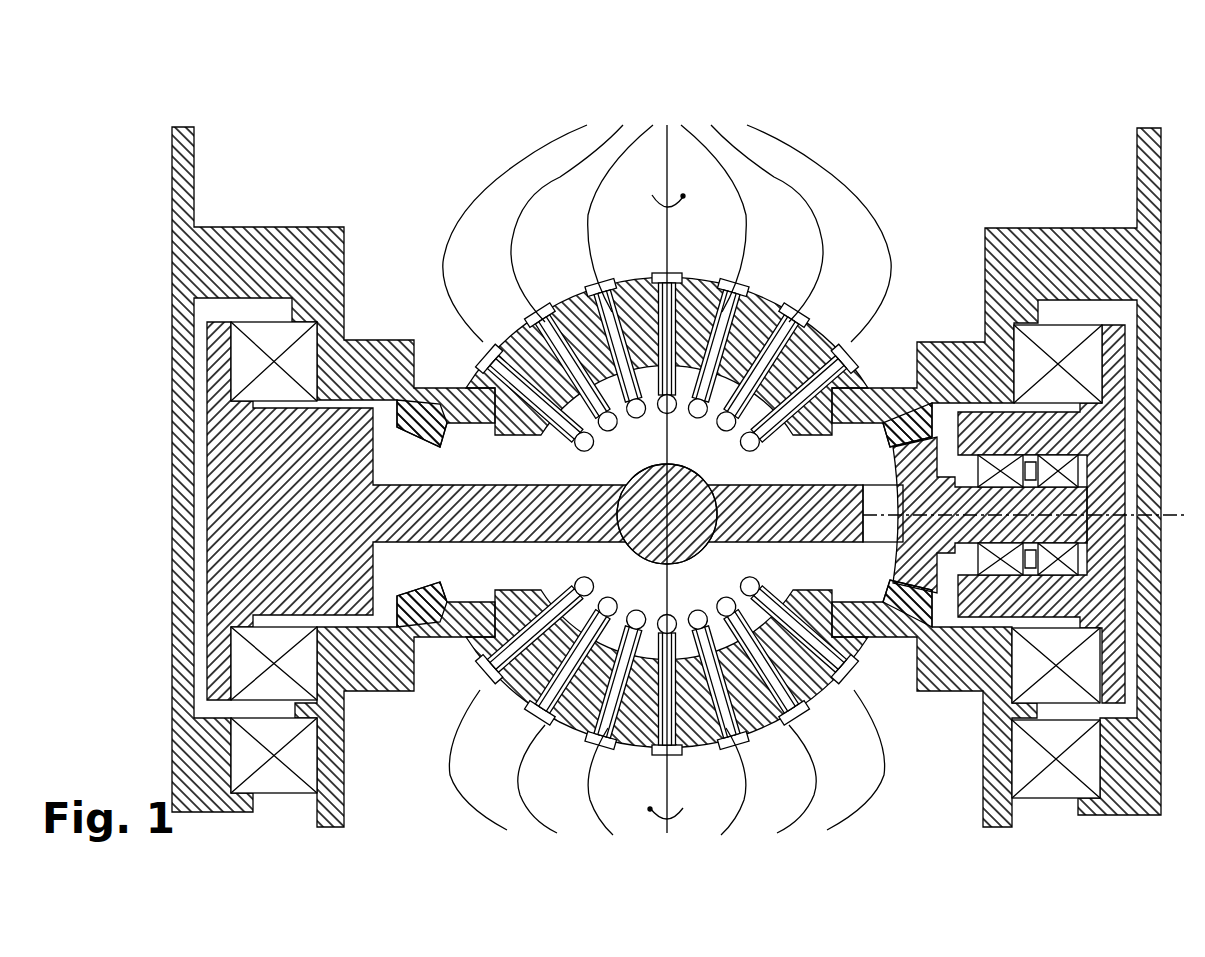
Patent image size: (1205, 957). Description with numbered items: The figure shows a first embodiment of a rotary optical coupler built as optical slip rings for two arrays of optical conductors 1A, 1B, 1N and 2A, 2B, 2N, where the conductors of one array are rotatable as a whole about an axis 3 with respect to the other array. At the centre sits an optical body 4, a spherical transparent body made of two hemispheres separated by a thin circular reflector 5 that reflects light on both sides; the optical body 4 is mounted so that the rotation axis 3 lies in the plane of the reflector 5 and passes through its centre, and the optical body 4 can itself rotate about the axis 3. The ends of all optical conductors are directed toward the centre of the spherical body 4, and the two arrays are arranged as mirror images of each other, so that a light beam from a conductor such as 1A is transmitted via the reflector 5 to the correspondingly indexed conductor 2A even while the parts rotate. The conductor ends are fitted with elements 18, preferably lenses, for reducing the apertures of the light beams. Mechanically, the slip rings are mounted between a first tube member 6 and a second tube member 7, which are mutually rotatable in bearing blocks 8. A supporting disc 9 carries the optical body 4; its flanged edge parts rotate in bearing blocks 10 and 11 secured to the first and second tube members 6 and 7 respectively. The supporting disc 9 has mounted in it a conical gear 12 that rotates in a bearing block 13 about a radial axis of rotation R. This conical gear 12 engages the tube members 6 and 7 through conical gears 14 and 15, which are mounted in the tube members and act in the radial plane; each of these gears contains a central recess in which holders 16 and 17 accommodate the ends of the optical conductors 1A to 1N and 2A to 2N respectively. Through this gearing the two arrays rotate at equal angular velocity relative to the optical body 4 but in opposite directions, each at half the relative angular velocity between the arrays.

The optical conductor of the first array 1A is at (527, 377).
The optical conductor of the first array 1B is at (570, 347).
The optical conductor of the first array 1N is at (803, 377).
The optical conductor of the second array 2A is at (529, 653).
The optical conductor of the second array 2B is at (570, 682).
The optical conductor of the second array 2N is at (803, 654).
The axis 3 is at (666, 479).
The optical body 4 is at (695, 556).
The reflector 5 is at (667, 514).
The first tube member 6 is at (666, 471).
The second tube member 7 is at (666, 704).
The bearing blocks 8 is at (308, 768).
The supporting disc 9 is at (666, 512).
The bearing block 10 is at (308, 366).
The bearing block 11 is at (308, 668).
The conical gear 12 is at (893, 460).
The bearing block 13 is at (1026, 574).
The conical gear 14 is at (664, 423).
The conical gear 15 is at (664, 603).
The holder 16 is at (667, 356).
The holder 17 is at (667, 669).
The elements for reducing the apertures 18 is at (654, 424).
The radial axis of rotation R is at (1168, 515).